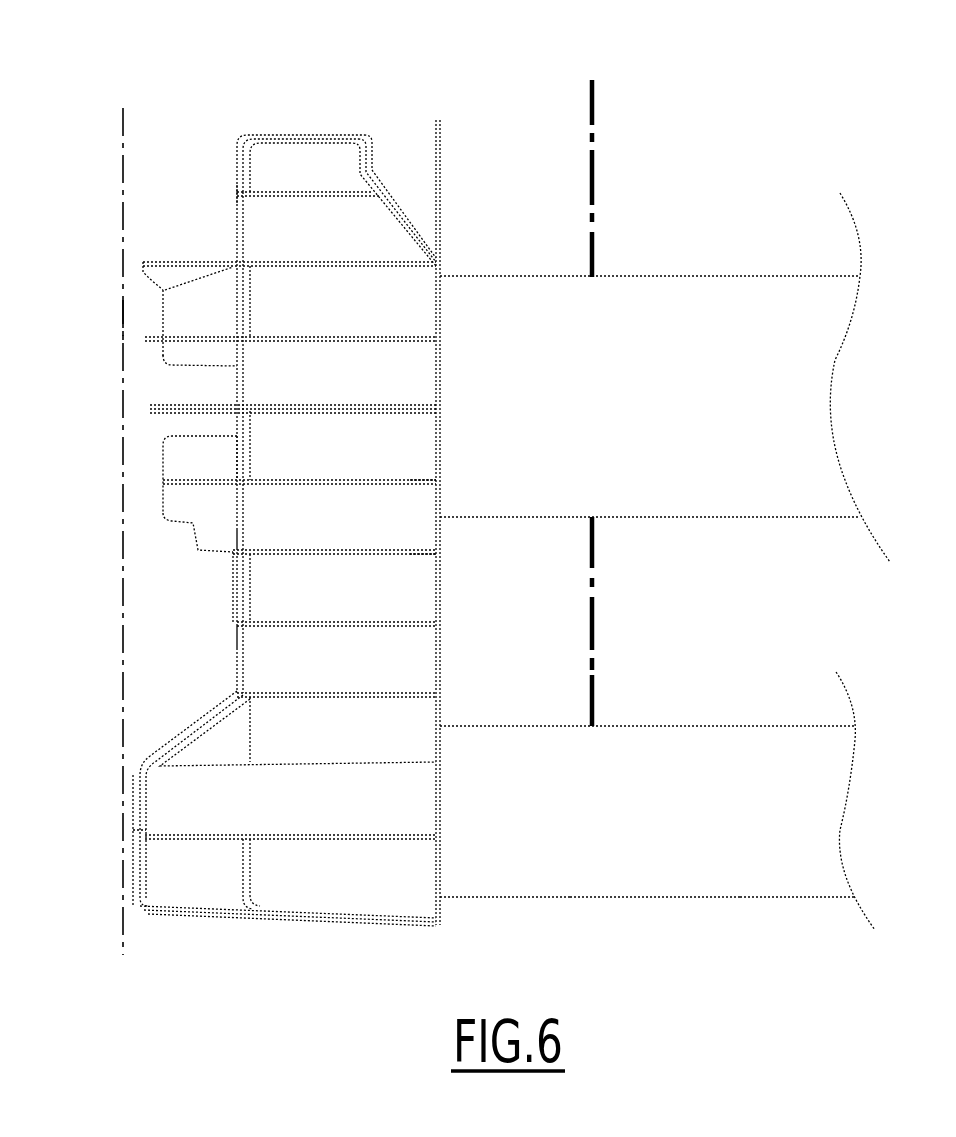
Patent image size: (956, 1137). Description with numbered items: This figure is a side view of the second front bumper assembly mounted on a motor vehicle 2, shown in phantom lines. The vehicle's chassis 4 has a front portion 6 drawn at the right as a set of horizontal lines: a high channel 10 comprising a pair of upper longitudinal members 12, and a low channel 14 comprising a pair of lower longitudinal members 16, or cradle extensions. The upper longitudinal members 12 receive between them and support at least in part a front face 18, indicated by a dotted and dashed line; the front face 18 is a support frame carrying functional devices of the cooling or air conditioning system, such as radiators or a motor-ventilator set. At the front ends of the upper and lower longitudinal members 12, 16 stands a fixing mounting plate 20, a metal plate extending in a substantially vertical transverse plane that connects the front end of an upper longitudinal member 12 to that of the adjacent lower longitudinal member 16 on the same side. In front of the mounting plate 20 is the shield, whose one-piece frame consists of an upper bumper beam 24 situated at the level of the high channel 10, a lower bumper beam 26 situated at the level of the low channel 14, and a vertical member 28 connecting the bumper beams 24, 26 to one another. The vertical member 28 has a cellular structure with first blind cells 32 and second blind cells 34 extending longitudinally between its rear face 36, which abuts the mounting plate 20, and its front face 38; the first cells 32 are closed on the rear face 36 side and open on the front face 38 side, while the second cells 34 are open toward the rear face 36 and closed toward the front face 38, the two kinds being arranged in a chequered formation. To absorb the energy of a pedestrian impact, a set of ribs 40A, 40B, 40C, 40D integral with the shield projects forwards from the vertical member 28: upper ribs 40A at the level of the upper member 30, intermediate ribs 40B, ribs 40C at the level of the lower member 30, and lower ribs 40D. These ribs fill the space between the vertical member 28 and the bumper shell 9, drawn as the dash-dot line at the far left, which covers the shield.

The motor vehicle 2 is at (723, 217).
The chassis 4 is at (603, 910).
The front portion 6 is at (540, 905).
The bumper shell 9 is at (123, 122).
The high channel 10 is at (783, 518).
The upper longitudinal members 12 is at (662, 497).
The low channel 14 is at (782, 917).
The lower longitudinal members 16 is at (700, 883).
The front face 18 is at (597, 102).
The fixing mounting plates 20 is at (437, 140).
The upper bumper beam 24 is at (124, 322).
The lower bumper beam 26 is at (198, 920).
The vertical members 28 is at (300, 112).
The member 30 is at (165, 360).
The first blind cells 32 is at (267, 530).
The second blind cells 34 is at (415, 452).
The rear face 36 is at (441, 362).
The front face 38 is at (237, 196).
The upper ribs 40A is at (163, 270).
The intermediate ribs 40B is at (173, 405).
The ribs at the level of the lower member 40C is at (157, 477).
The lower ribs 40D is at (182, 733).